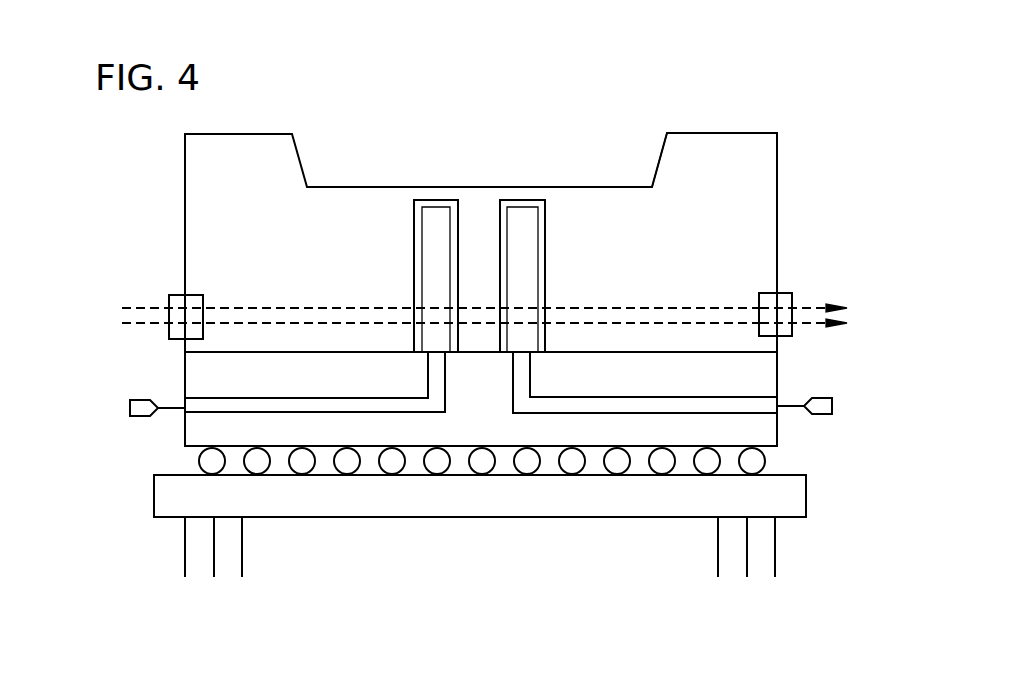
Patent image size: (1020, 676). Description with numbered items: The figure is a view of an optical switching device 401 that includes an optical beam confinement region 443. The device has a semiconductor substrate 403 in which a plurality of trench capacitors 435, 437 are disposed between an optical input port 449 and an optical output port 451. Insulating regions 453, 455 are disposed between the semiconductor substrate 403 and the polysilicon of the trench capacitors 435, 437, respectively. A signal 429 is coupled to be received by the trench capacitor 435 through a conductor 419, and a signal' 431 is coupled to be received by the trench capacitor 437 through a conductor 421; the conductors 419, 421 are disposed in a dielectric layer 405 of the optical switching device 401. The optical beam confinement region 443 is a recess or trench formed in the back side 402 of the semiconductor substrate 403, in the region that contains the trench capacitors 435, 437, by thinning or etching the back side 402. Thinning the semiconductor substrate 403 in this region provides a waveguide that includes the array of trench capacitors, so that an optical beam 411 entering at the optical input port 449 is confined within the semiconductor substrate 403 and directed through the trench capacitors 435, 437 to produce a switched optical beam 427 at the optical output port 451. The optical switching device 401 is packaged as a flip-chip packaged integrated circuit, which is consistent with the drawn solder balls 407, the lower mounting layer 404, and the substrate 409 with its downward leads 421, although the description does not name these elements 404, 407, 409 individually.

The optical switching device 401 is at (331, 126).
The back side 402 is at (707, 133).
The semiconductor substrate 403 is at (777, 215).
The substrate upper surface 404 is at (770, 447).
The dielectric layer 405 is at (780, 380).
The solder balls 407 is at (657, 468).
The printed circuit substrate 409 is at (808, 505).
The optical beam 411 is at (120, 300).
The conductor 419 is at (427, 372).
The conductor 421 is at (530, 386).
The switched optical beam 427 is at (855, 300).
The signal 429 is at (76, 394).
The signal' 431 is at (877, 420).
The trench capacitor 435 is at (436, 281).
The trench capacitor 437 is at (525, 280).
The optical beam confinement region 443 is at (479, 187).
The optical input port 449 is at (180, 295).
The optical output port 451 is at (780, 293).
The insulating region 453 is at (416, 238).
The insulating region 455 is at (546, 237).